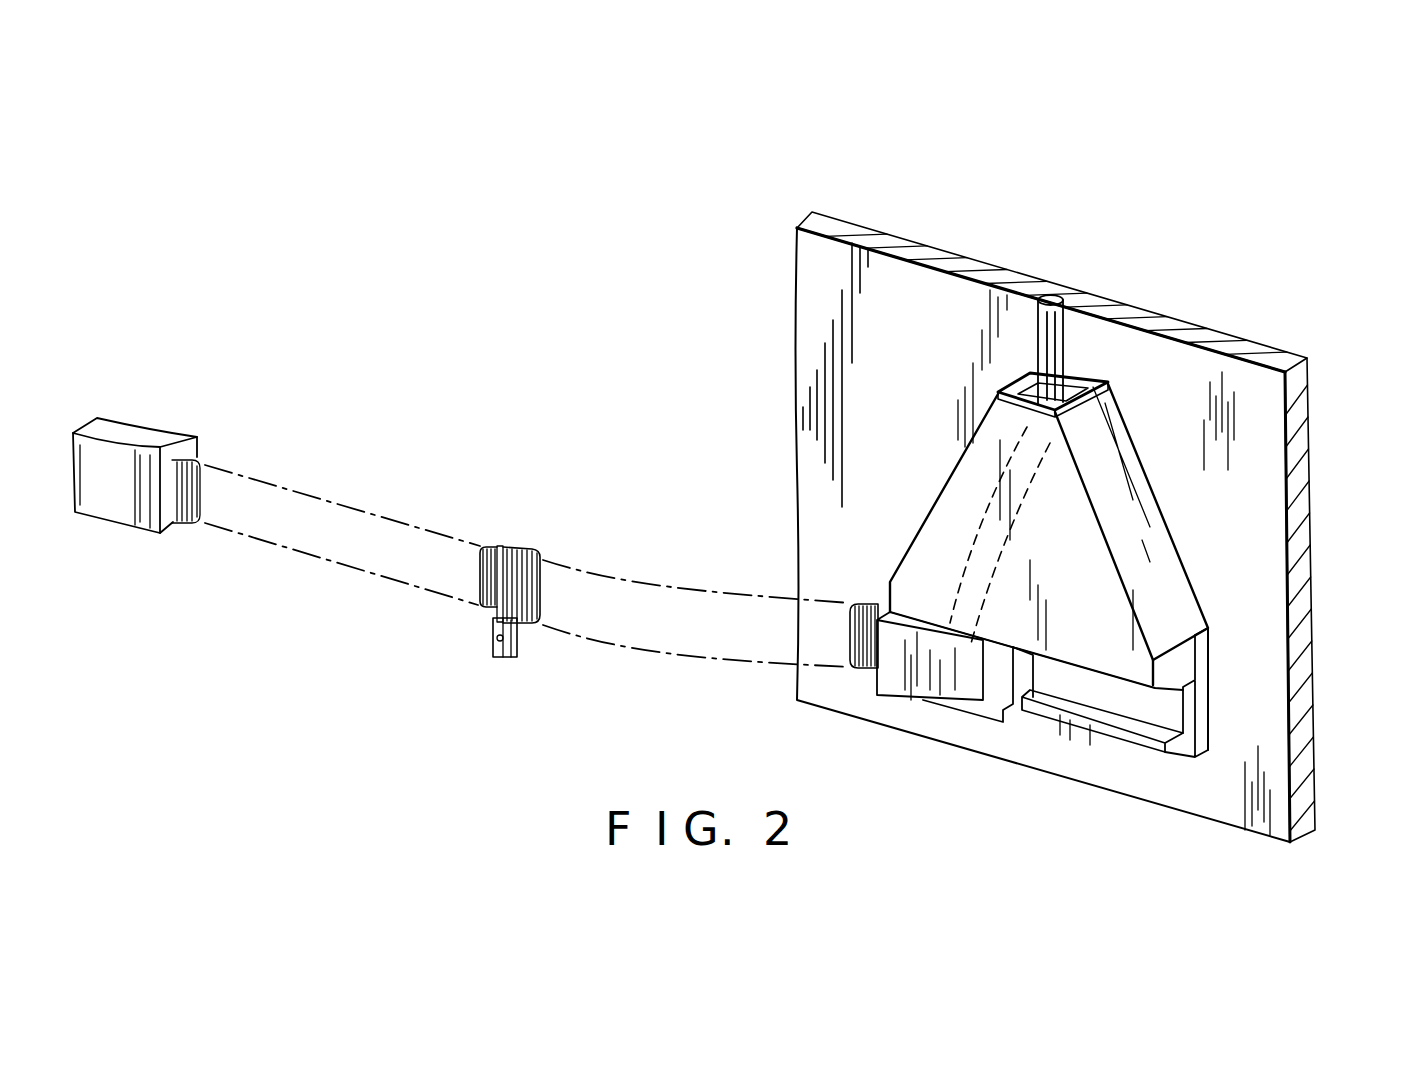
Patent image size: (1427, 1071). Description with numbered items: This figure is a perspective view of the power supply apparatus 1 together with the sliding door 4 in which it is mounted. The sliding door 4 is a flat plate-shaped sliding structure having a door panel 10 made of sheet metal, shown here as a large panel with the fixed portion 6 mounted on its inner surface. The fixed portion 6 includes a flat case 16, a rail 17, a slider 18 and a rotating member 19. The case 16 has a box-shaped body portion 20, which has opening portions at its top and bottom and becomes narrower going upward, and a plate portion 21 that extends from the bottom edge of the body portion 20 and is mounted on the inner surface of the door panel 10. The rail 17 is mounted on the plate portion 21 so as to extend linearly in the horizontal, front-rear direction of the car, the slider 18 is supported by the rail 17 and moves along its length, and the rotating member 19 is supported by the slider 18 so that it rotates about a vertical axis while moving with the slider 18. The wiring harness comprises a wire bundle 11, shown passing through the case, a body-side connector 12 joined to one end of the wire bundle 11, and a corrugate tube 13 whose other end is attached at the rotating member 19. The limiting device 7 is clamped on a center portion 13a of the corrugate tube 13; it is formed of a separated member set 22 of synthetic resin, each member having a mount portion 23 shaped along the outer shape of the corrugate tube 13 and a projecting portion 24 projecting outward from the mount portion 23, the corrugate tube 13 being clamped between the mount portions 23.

The power supply apparatus 1 is at (693, 408).
The sliding door 4 is at (971, 256).
The fixed portion 6 is at (1195, 578).
The limiting device 7 is at (517, 639).
The door panel 10 is at (1165, 370).
The wire bundle 11 is at (990, 513).
The body-side connector 12 is at (130, 431).
The corrugate tube 13 is at (307, 557).
The center portion 13a is at (543, 560).
The case 16 is at (1170, 523).
The rail 17 is at (1102, 738).
The slider 18 is at (982, 703).
The rotating member 19 is at (903, 700).
The body portion 20 is at (1125, 488).
The plate portion 21 is at (1203, 688).
The separated member set 22 is at (517, 653).
The mount portion 23 is at (533, 550).
The projecting portion 24 is at (523, 640).